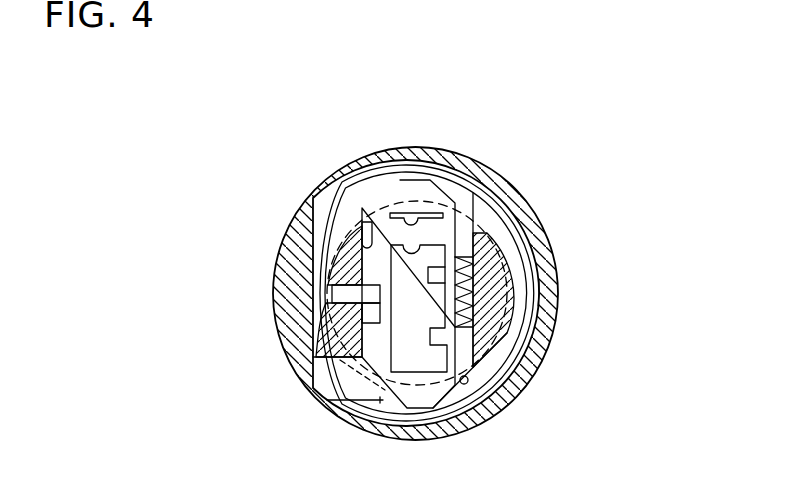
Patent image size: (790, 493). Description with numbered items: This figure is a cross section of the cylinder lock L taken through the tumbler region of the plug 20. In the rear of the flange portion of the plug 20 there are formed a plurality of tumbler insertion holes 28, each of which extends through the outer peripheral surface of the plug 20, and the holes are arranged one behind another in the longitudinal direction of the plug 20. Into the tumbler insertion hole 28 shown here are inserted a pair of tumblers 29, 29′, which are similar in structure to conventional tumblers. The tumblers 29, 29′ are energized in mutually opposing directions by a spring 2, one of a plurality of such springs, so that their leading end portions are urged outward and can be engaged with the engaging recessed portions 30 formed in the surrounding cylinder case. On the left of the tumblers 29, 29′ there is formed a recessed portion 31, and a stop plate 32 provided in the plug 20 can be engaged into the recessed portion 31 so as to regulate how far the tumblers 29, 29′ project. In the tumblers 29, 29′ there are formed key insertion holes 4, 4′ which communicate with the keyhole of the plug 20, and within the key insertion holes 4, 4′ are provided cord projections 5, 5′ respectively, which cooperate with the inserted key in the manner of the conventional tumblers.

The lock L is at (574, 140).
The spring 2 is at (500, 275).
The key insertion hole 4 is at (401, 212).
The key insertion hole 4′ is at (434, 270).
The cord projection 5 is at (458, 130).
The cord projection 5′ is at (468, 381).
The plug 20 is at (539, 292).
The tumbler insertion hole 28 is at (320, 185).
The tumbler 29 is at (376, 168).
The tumbler 29′ is at (322, 353).
The engaging recessed portion 30 is at (327, 400).
The recessed portion 31 is at (350, 342).
The stop plate 32 is at (334, 293).